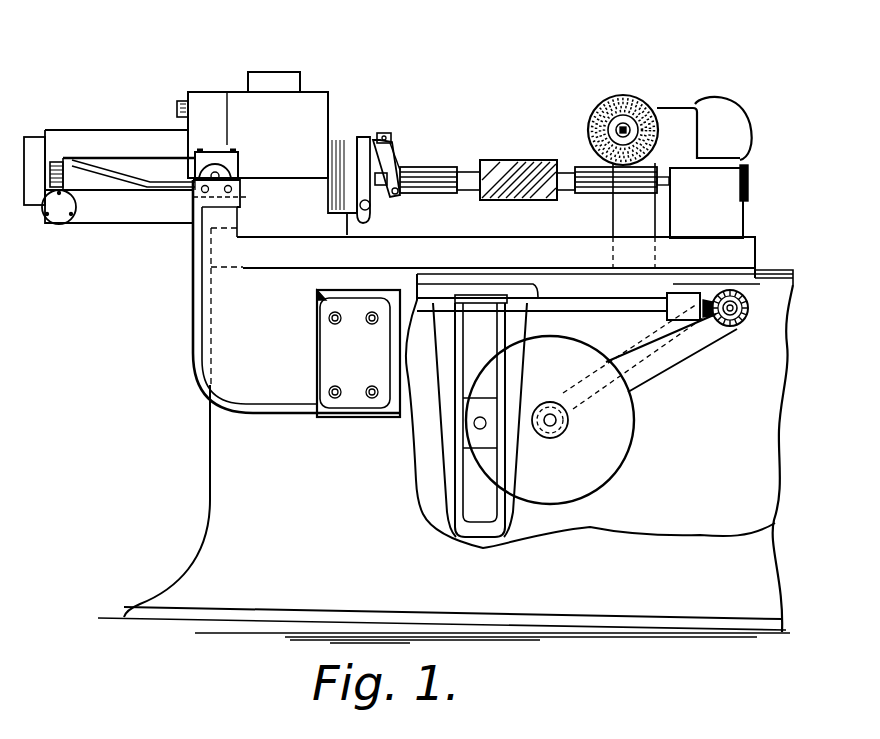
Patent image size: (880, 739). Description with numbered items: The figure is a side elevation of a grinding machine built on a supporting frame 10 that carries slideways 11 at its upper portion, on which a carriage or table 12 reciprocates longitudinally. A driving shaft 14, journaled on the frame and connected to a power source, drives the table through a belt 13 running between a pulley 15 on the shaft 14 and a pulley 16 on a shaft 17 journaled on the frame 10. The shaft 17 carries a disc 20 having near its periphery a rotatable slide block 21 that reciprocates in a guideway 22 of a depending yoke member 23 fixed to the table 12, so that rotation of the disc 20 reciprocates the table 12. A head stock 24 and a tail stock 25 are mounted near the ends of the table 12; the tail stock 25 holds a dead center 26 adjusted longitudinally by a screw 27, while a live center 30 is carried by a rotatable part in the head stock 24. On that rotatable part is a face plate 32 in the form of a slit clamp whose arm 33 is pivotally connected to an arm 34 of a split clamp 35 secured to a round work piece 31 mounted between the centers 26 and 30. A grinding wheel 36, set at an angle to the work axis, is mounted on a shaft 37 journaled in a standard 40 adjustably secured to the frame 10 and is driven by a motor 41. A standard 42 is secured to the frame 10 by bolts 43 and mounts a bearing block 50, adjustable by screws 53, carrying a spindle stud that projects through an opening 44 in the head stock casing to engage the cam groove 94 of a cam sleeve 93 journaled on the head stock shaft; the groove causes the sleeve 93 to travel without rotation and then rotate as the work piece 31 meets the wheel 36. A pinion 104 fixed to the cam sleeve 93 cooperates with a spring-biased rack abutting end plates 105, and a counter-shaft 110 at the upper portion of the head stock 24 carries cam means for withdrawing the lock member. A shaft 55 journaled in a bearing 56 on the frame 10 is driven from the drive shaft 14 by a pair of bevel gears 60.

The supporting frame 10 is at (209, 422).
The slideways 11 is at (772, 258).
The table 12 is at (752, 250).
The belt 13 is at (673, 366).
The driving shaft 14 is at (745, 302).
The pulley 15 is at (733, 327).
The pulley 16 is at (559, 434).
The shaft 17 is at (557, 419).
The disc 20 is at (604, 468).
The slide block 21 is at (488, 437).
The guideway 22 is at (463, 461).
The yoke member 23 is at (445, 425).
The head stock 24 is at (280, 80).
The tail stock 25 is at (716, 220).
The dead center 26 is at (663, 183).
The screw 27 is at (750, 185).
The live center 30 is at (382, 186).
The work piece 31 is at (468, 172).
The face plate 32 is at (365, 142).
The arm 33 is at (418, 102).
The arm 34 is at (395, 140).
The split clamp 35 is at (402, 160).
The grinding wheel 36 is at (632, 98).
The shaft 37 is at (615, 127).
The standard 40 is at (667, 104).
The motor 41 is at (722, 112).
The standard 42 is at (192, 322).
The bolts 43 is at (372, 386).
The opening 44 is at (110, 188).
The bearing block 50 is at (236, 170).
The adjusting screws 53 is at (242, 204).
The shaft 55 is at (594, 309).
The bearing 56 is at (668, 309).
The bevel gears 60 is at (712, 326).
The cam sleeve 93 is at (152, 165).
The cam groove 94 is at (172, 182).
The pinion 104 is at (60, 163).
The end plates 105 is at (50, 215).
The counter-shaft 110 is at (183, 97).